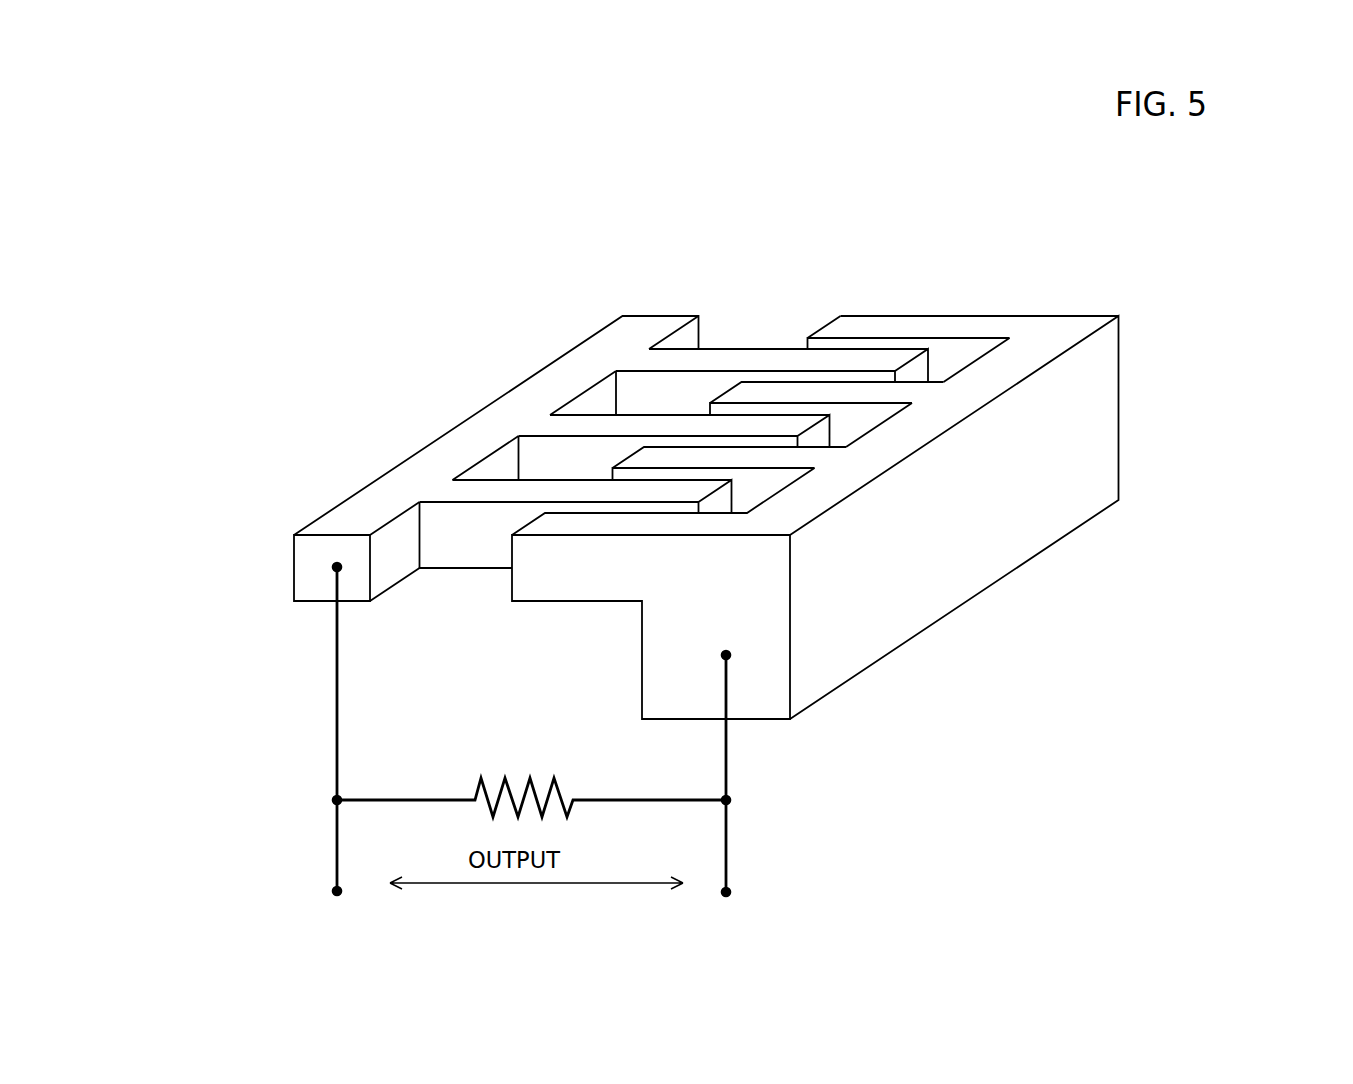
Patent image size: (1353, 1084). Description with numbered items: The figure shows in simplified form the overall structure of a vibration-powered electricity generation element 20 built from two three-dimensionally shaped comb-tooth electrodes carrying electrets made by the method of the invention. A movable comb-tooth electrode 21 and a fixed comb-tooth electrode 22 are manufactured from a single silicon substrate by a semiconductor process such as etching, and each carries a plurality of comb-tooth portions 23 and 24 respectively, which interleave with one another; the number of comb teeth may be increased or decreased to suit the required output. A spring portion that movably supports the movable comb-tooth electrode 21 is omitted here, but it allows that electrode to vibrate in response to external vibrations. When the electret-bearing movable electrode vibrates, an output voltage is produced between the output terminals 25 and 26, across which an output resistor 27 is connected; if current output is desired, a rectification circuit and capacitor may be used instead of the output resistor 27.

The vibration-powered electricity generation element 20 is at (627, 262).
The movable comb-tooth electrode 21 is at (470, 422).
The fixed comb-tooth electrode 22 is at (945, 565).
The comb-tooth portions 23 is at (728, 358).
The comb-tooth portions 24 is at (794, 387).
The output terminal 25 is at (333, 891).
The output terminal 26 is at (732, 892).
The output resistor 27 is at (531, 761).